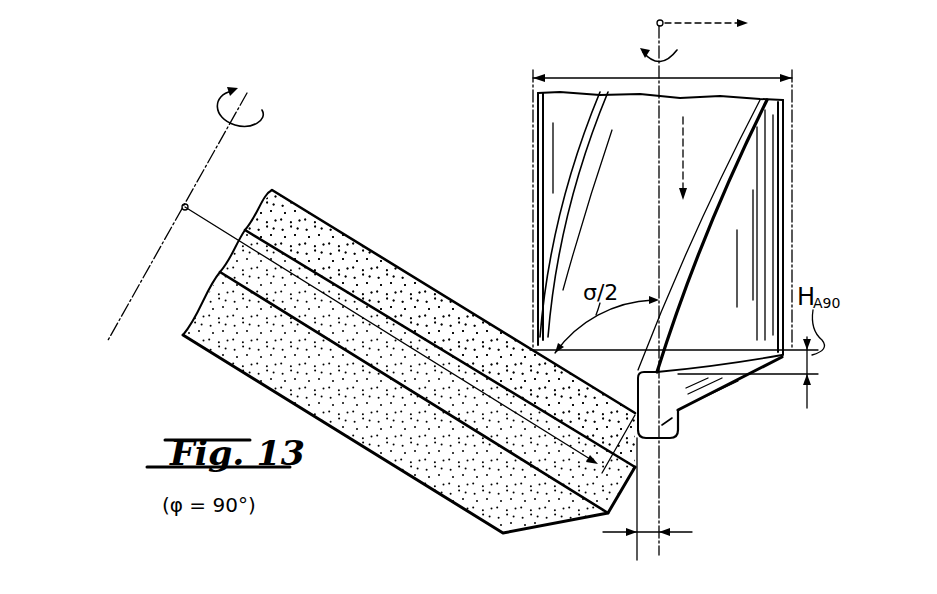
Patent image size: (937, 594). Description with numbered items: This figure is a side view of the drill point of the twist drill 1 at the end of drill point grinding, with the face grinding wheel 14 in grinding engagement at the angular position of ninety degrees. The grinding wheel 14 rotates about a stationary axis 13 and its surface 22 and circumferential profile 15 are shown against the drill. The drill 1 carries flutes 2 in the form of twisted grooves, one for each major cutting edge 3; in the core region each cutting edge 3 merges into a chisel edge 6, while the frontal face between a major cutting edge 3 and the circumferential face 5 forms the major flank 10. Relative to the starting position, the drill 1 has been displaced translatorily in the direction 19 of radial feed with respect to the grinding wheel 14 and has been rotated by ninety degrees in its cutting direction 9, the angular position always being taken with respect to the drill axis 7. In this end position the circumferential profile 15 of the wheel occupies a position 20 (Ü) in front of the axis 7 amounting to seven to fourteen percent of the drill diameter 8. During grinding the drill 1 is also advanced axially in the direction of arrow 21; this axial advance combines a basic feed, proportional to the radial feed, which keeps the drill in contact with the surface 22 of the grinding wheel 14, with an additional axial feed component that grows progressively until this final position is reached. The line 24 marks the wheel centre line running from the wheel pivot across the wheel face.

The twist drill 1 is at (800, 131).
The flutes 2 is at (620, 124).
The major cutting edge 3 is at (636, 392).
The circumferential face 5 is at (752, 225).
The chisel edge 6 is at (662, 437).
The drill axis 7 is at (659, 222).
The drill external diameter 8 is at (757, 78).
The cutting direction 9 is at (645, 60).
The major flank 10 is at (704, 392).
The stationary axis 13 is at (223, 140).
The face grinding wheel 14 is at (374, 240).
The circumferential profile 15 is at (637, 457).
The direction of radial feed 19 is at (694, 25).
The position (Ü) in front of axis 20 is at (647, 540).
The arrow of axial advance 21 is at (684, 117).
The surface of grinding wheel 22 is at (483, 318).
The grinding wheel centre line 24 is at (367, 321).